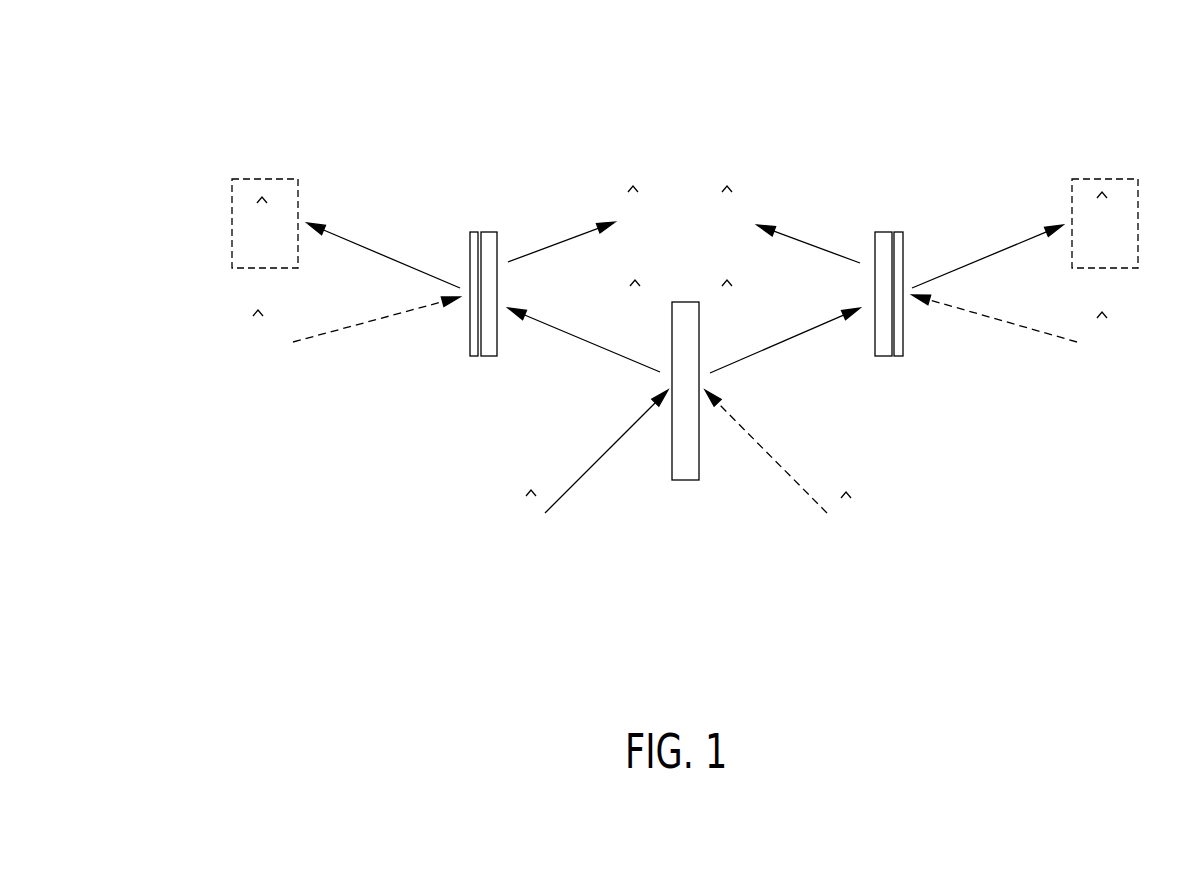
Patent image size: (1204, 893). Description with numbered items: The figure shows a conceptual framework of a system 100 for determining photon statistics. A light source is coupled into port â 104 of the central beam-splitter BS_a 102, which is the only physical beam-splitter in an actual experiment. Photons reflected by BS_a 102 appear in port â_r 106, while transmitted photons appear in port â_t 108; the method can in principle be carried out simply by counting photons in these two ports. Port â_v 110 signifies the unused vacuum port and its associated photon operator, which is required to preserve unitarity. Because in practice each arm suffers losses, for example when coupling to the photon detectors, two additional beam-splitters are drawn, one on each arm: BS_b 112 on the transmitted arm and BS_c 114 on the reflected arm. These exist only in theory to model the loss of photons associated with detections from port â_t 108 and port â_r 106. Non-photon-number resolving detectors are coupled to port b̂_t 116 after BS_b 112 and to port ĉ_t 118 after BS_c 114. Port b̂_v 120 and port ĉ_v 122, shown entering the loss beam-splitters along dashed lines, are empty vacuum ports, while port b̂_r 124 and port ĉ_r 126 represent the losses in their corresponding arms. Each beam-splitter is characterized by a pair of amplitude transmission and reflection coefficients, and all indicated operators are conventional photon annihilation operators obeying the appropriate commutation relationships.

The system for determining photon statistics 100 is at (997, 85).
The beam-splitter BS_a 102 is at (686, 564).
The port â 104 is at (497, 518).
The port â_r 106 is at (604, 301).
The port â_t 108 is at (766, 305).
The port â_v 110 is at (852, 564).
The beam-splitter BS_b 112 is at (888, 439).
The beam-splitter BS_c 114 is at (455, 424).
The port b̂_t 116 is at (1115, 178).
The port ĉ_t 118 is at (644, 163).
The port b̂_v 120 is at (1144, 372).
The port ĉ_v 122 is at (224, 341).
The port b̂_r 124 is at (735, 170).
The port ĉ_r 126 is at (276, 178).